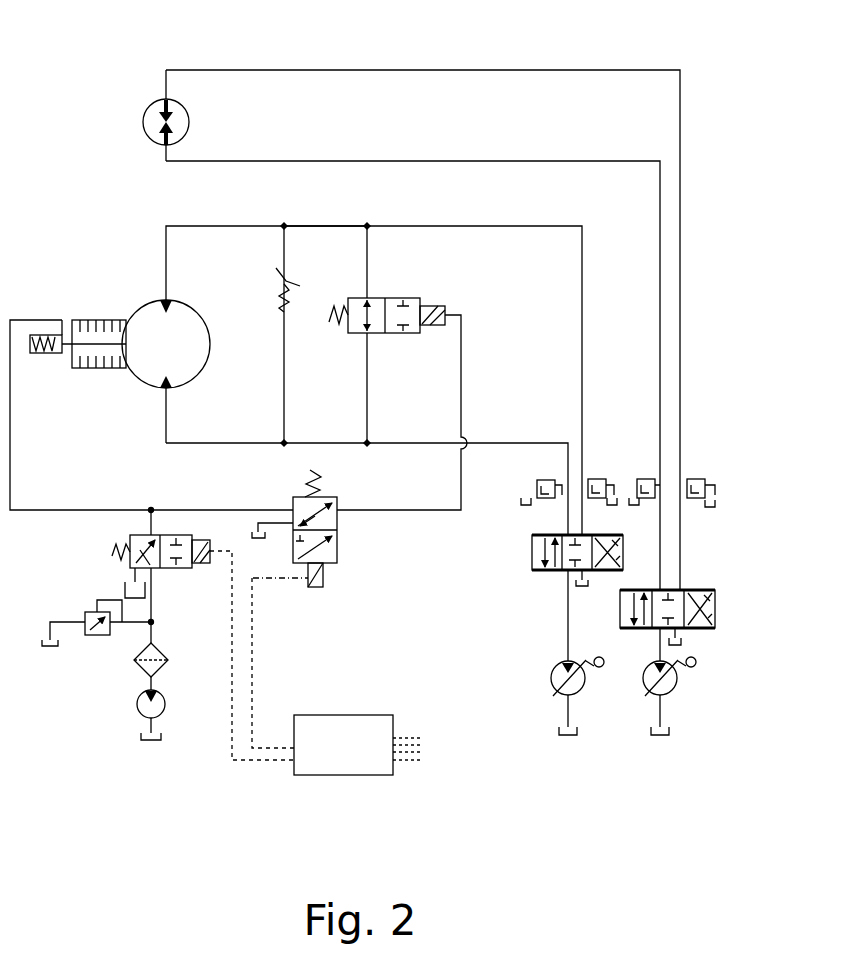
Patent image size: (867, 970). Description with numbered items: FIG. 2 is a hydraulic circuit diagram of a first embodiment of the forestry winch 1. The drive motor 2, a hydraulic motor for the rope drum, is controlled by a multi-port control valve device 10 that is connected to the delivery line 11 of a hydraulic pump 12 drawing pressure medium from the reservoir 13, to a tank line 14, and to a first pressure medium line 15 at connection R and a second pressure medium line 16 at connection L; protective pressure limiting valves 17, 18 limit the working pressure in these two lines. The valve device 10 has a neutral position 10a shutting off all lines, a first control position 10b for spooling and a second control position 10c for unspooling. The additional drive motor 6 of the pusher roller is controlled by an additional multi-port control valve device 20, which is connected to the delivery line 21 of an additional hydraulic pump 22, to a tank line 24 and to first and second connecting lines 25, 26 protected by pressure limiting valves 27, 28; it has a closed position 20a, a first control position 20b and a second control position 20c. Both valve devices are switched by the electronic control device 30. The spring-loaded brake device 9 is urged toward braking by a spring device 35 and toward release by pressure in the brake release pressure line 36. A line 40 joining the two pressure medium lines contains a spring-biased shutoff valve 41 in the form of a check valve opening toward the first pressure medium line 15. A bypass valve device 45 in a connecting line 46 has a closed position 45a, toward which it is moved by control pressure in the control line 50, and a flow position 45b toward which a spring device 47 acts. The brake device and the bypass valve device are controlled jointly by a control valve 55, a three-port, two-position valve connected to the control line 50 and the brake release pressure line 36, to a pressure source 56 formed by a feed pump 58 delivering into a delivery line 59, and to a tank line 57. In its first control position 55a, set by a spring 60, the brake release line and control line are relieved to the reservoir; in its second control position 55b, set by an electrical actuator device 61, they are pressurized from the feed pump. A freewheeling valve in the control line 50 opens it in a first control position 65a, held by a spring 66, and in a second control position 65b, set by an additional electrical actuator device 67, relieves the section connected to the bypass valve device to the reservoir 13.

The forestry winch 1 is at (68, 145).
The drive motor 2 is at (150, 313).
The additional drive motor 6 is at (143, 108).
The brake device 9 is at (90, 316).
The multi-port control valve device 10 is at (596, 558).
The neutral position 10a is at (540, 534).
The first control position 10b is at (530, 553).
The second control position 10c is at (628, 553).
The delivery line 11 is at (566, 625).
The hydraulic pump 12 is at (552, 680).
The reservoir 13 is at (259, 542).
The tank line 14 is at (618, 592).
The first pressure medium line 15 is at (522, 440).
The second pressure medium line 16 is at (585, 243).
The protective pressure limiting valve 17 is at (537, 486).
The protective pressure limiting valve 18 is at (599, 470).
The additional multi-port control valve device 20 is at (691, 615).
The closed position 20a is at (688, 590).
The first control position 20b is at (655, 645).
The second control position 20c is at (718, 608).
The delivery line 21 is at (648, 690).
The additional hydraulic pump 22 is at (672, 692).
The tank line 24 is at (683, 640).
The first connecting line 25 is at (577, 161).
The second connecting line 26 is at (583, 70).
The pressure limiting valve 27 is at (645, 470).
The pressure limiting valve 28 is at (706, 481).
The electronic control device 30 is at (335, 778).
The spring device 35 is at (37, 355).
The brake release pressure line 36 is at (14, 433).
The line 40 is at (281, 228).
The spring-biased shutoff valve 41 is at (280, 275).
The bypass valve device 45 is at (427, 258).
The closed position 45a is at (417, 297).
The flow position 45b is at (342, 305).
The connecting line 46 is at (370, 245).
The spring device 47 is at (330, 268).
The control line 50 is at (464, 340).
The control valve 55 is at (292, 571).
The first control position 55a is at (125, 537).
The second control position 55b is at (169, 660).
The pressure source 56 is at (83, 658).
The tank line 57 is at (125, 585).
The feed pump 58 is at (148, 727).
The delivery line 59 is at (138, 702).
The spring 60 is at (122, 570).
The electrical actuator device 61 is at (190, 568).
The first control position 65a is at (345, 520).
The second control position 65b is at (340, 555).
The spring 66 is at (303, 485).
The additional electrical actuator device 67 is at (318, 590).